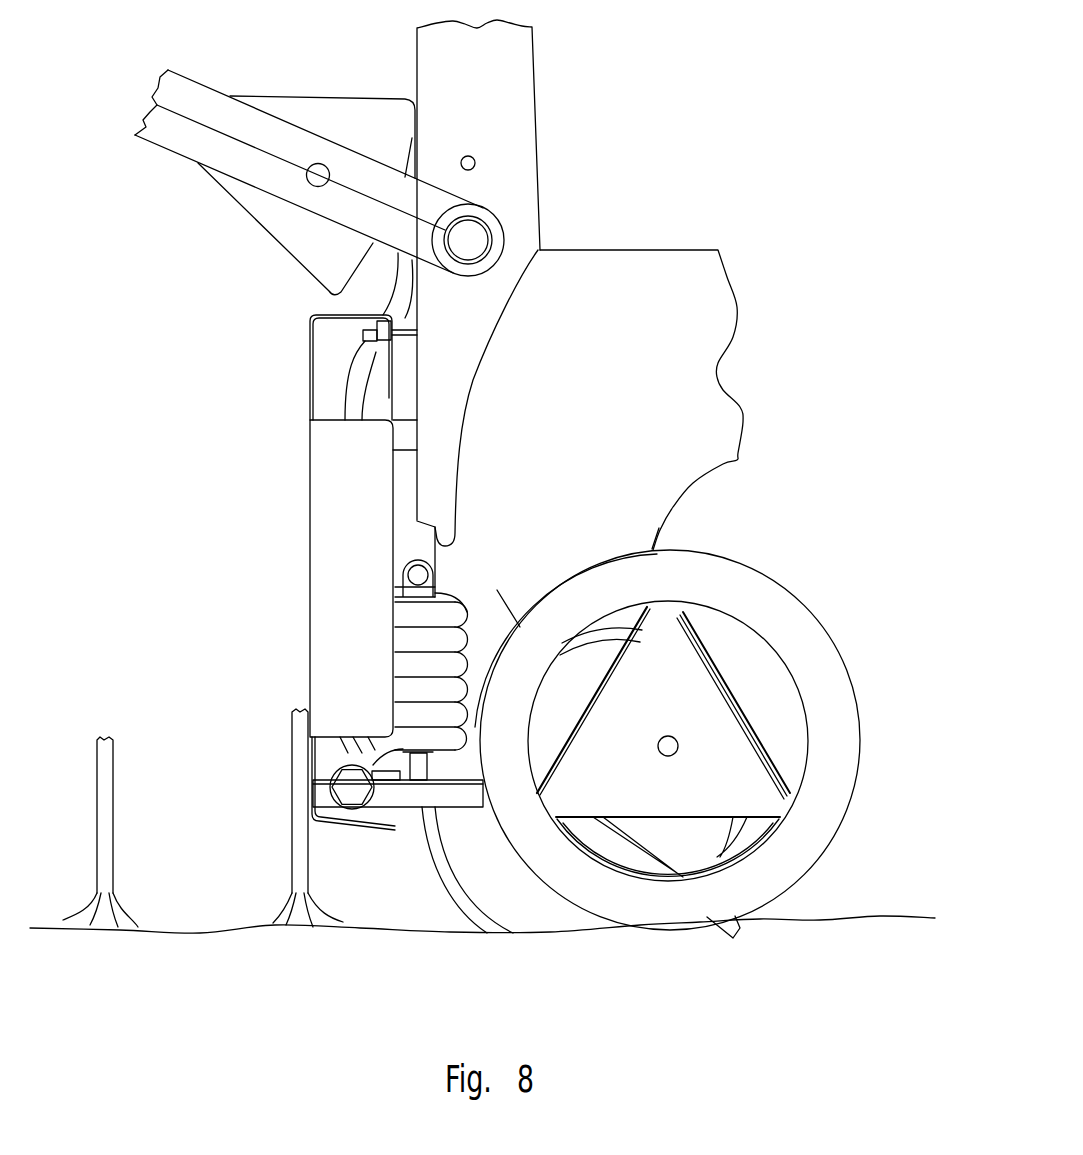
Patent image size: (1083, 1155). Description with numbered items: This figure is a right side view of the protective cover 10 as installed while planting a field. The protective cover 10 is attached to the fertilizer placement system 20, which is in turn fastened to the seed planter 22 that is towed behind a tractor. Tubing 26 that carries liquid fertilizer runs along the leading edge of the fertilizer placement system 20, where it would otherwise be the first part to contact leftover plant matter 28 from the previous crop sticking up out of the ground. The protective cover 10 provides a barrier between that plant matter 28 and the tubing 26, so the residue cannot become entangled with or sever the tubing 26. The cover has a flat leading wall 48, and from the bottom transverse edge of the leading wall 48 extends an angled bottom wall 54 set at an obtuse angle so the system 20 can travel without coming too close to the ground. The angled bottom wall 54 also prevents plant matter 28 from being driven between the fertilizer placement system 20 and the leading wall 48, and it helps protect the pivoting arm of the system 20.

The protective cover 10 is at (303, 439).
The fertilizer placement system 20 is at (402, 395).
The seed planter 22 is at (497, 102).
The tubing 26 is at (398, 303).
The leftover plant matter 28 is at (298, 786).
The leading wall 48 is at (310, 506).
The angled bottom wall 54 is at (366, 832).